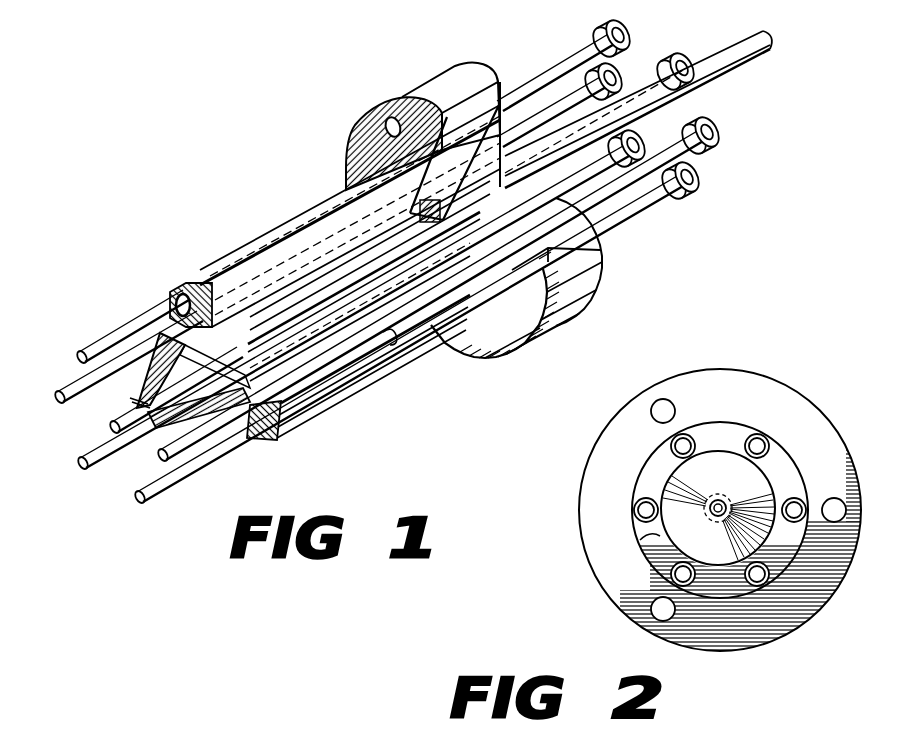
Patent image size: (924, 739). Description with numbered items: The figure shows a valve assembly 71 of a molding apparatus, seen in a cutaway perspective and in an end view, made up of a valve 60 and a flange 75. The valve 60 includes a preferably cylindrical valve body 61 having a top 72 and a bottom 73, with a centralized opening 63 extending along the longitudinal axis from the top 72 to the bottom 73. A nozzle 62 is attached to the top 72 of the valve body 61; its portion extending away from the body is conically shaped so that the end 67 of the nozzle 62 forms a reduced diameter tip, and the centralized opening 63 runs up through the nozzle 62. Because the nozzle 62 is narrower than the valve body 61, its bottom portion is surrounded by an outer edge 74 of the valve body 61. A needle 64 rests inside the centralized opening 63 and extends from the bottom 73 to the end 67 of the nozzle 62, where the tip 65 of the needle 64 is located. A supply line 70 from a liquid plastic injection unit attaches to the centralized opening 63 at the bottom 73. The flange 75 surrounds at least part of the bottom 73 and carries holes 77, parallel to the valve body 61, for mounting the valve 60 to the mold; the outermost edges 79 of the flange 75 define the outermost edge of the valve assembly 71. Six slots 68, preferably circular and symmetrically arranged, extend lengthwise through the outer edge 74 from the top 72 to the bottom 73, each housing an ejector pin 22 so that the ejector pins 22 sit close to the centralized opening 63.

In FIG. 1, the valve 60 is at (226, 218).
In FIG. 2, the valve 60 is at (578, 440).
In FIG. 1, the valve body 61 is at (293, 204).
In FIG. 2, the valve body 61 is at (637, 468).
In FIG. 1, the nozzle 62 is at (162, 334).
In FIG. 2, the nozzle 62 is at (712, 485).
In FIG. 1, the centralized opening 63 is at (338, 270).
In FIG. 1, the needle 64 is at (734, 52).
In FIG. 1, the tip 65 is at (113, 440).
In FIG. 2, the tip 65 is at (712, 514).
In FIG. 1, the end 67 is at (132, 402).
In FIG. 1, the slots 68 is at (178, 290).
In FIG. 2, the slots 68 is at (757, 438).
In FIG. 1, the supply line 70 is at (512, 95).
In FIG. 1, the valve assembly 71 is at (347, 178).
In FIG. 1, the top 72 is at (196, 340).
In FIG. 1, the bottom 73 is at (603, 265).
In FIG. 1, the outer edge 74 is at (268, 442).
In FIG. 2, the outer edge 74 is at (645, 535).
In FIG. 1, the flange 75 is at (404, 94).
In FIG. 2, the flange 75 is at (816, 449).
In FIG. 1, the holes 77 is at (388, 122).
In FIG. 2, the holes 77 is at (667, 405).
In FIG. 1, the outermost edges 79 is at (524, 348).
In FIG. 2, the outermost edges 79 is at (780, 398).
In FIG. 1, the ejector pins 22 is at (66, 392).
In FIG. 2, the ejector pins 22 is at (640, 508).